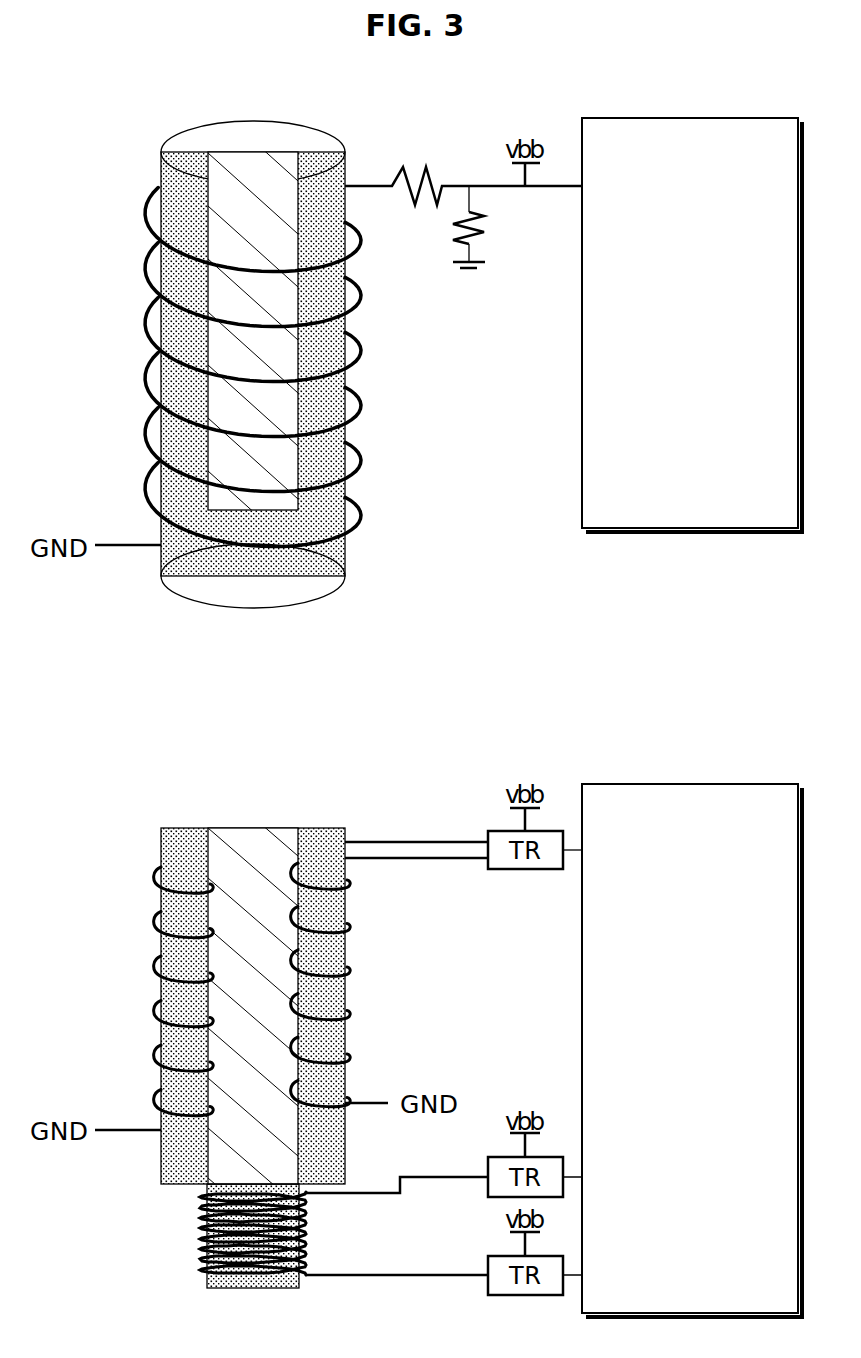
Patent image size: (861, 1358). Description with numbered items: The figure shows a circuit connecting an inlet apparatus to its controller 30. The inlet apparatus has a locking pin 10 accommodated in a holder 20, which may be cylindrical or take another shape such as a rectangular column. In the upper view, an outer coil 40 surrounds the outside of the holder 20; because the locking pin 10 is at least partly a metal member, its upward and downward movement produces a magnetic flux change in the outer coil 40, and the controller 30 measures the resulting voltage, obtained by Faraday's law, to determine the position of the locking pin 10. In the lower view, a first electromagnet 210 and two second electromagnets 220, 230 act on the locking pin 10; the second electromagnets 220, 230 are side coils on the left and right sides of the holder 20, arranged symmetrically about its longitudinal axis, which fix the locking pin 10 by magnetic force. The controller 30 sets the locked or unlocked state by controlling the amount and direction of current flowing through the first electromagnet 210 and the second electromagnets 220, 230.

The locking pin 10 is at (255, 170).
The holder 20 is at (313, 163).
The controller 30 is at (776, 118).
The outer coil 40 is at (146, 270).
The first electromagnet 210 is at (200, 1245).
The second electromagnet 220 is at (156, 913).
The second electromagnet 230 is at (347, 978).